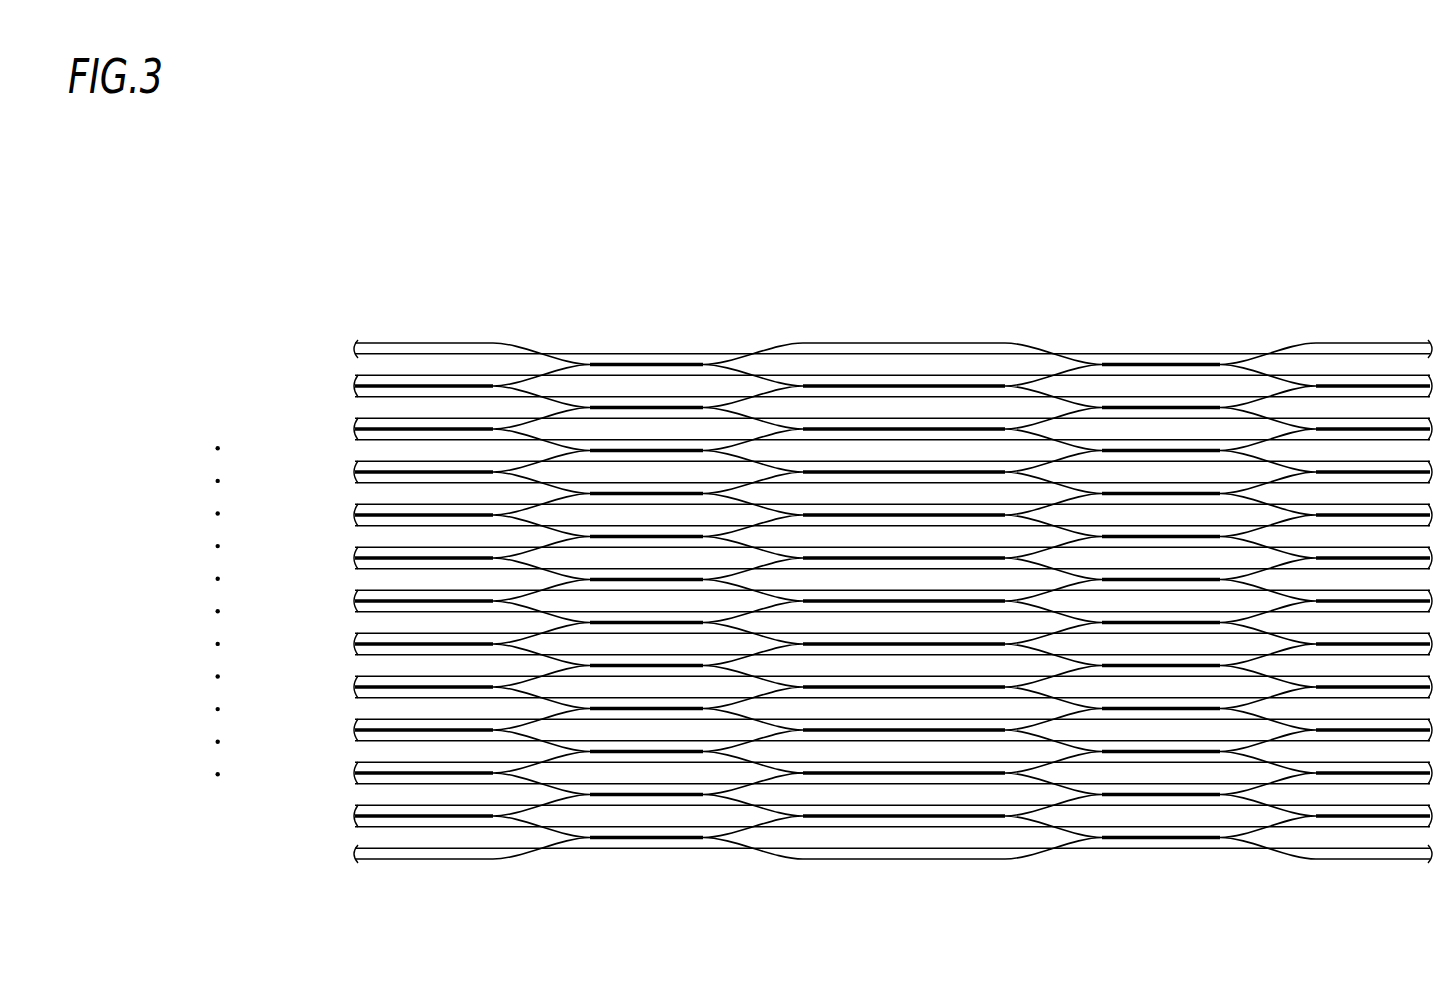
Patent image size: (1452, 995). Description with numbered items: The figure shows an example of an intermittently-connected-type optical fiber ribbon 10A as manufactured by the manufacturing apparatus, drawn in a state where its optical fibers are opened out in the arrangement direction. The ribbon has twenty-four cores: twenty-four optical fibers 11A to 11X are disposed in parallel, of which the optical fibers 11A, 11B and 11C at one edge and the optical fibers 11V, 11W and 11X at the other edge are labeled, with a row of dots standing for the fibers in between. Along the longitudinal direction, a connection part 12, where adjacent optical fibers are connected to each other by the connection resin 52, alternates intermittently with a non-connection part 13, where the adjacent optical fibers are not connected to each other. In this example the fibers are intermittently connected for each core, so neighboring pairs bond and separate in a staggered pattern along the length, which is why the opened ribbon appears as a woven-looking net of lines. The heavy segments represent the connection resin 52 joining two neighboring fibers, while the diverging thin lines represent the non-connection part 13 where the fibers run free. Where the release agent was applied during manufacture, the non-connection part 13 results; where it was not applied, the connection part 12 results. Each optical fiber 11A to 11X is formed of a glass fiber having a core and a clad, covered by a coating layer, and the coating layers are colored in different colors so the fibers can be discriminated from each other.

The intermittently-connected-type optical fiber ribbon 10A is at (975, 251).
The optical fiber 11A is at (355, 343).
The optical fiber 11B is at (355, 377).
The optical fiber 11C is at (355, 393).
The optical fiber 11V is at (355, 805).
The optical fiber 11W is at (355, 822).
The optical fiber 11X is at (355, 850).
The connection part 12 is at (624, 852).
The connection resin 52 is at (665, 840).
The non-connection part 13 is at (806, 840).